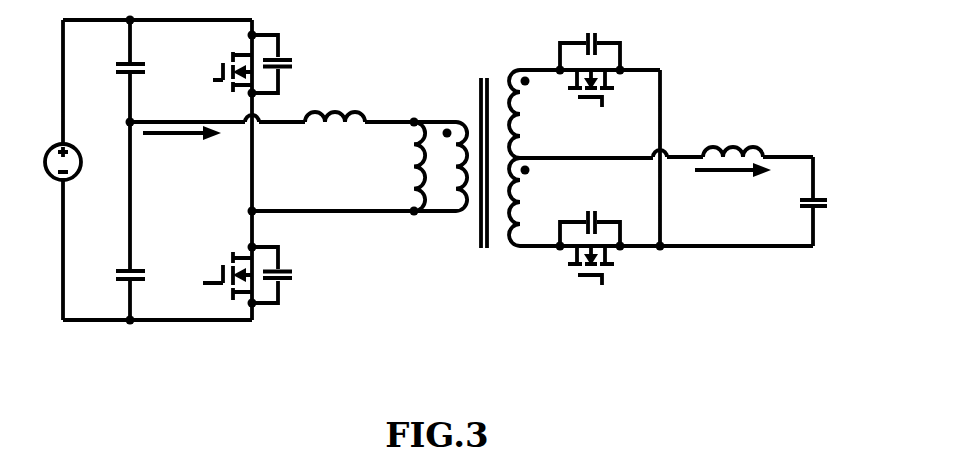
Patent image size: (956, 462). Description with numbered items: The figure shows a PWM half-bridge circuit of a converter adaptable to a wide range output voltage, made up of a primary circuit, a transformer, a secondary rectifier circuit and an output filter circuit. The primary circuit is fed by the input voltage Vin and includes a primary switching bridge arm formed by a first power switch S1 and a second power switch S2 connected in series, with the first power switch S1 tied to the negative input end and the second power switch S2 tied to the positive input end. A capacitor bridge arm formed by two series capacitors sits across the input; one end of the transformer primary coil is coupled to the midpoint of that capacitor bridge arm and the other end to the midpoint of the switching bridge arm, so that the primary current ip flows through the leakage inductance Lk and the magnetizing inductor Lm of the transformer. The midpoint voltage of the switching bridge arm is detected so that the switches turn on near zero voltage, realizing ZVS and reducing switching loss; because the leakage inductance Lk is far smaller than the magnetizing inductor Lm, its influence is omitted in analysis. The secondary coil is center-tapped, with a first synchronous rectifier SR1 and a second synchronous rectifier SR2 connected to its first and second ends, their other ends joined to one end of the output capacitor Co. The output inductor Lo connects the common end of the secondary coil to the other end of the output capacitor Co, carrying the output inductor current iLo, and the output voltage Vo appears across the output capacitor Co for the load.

The input voltage Vin is at (46, 162).
The primary current ip is at (182, 144).
The first power switch S1 is at (261, 275).
The second power switch S2 is at (266, 64).
The leakage inductance Lk is at (359, 132).
The magnetizing inductor Lm is at (404, 166).
The first synchronous rectifier SR1 is at (590, 264).
The second synchronous rectifier SR2 is at (590, 54).
The output inductor Lo is at (758, 138).
The output inductor current iLo is at (733, 181).
The output capacitor Co is at (743, 201).
The output voltage Vo is at (837, 205).